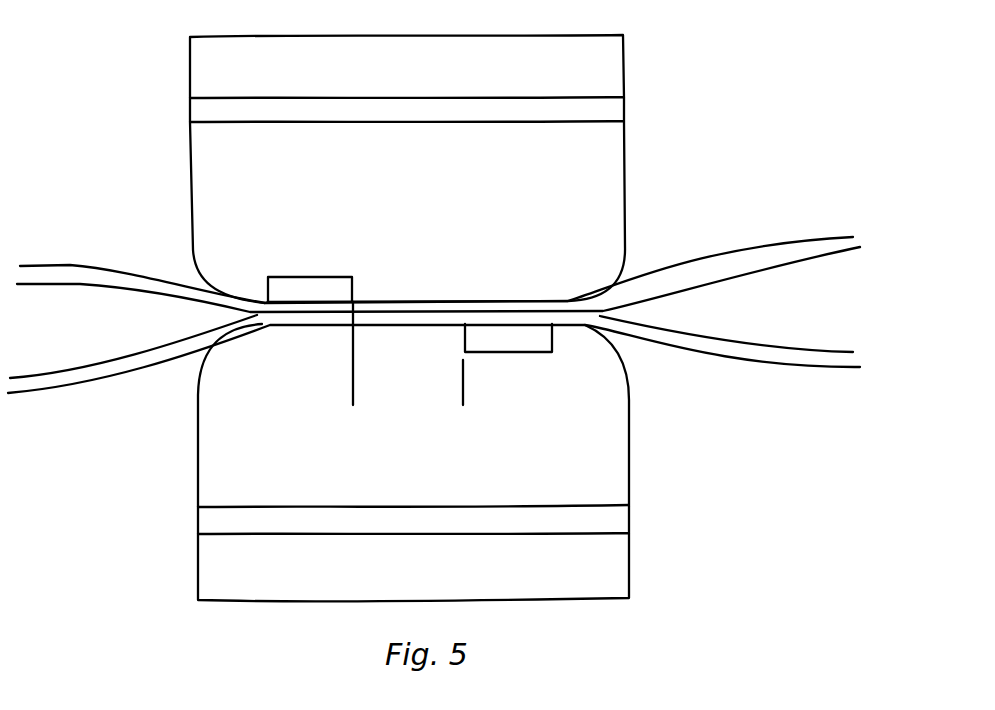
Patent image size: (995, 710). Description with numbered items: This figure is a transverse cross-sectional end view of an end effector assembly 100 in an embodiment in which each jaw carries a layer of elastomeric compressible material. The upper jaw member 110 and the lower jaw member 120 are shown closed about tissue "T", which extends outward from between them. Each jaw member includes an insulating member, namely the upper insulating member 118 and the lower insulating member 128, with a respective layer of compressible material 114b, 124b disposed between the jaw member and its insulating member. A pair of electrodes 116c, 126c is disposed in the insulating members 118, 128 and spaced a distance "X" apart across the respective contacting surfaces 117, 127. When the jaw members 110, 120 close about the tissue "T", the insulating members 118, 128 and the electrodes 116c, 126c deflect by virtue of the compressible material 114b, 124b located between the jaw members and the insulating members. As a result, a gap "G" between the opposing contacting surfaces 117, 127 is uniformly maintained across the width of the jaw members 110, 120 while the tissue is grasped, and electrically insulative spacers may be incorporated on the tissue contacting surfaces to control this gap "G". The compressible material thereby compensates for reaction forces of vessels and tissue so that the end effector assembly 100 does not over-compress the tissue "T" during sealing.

The end effector assembly 100 is at (88, 90).
The jaw member 110 is at (410, 77).
The layer of elastomeric compressible material 114b is at (205, 115).
The insulating member 118 is at (420, 188).
The electrode 116c is at (280, 283).
The contacting surface 117 is at (478, 300).
The tissue T is at (815, 246).
The gap G is at (428, 360).
The distance X is at (460, 387).
The contacting surface 127 is at (335, 328).
The insulating member 128 is at (412, 480).
The electrode 126c is at (540, 352).
The layer of elastomeric compressible material 124b is at (208, 521).
The jaw member 120 is at (413, 567).